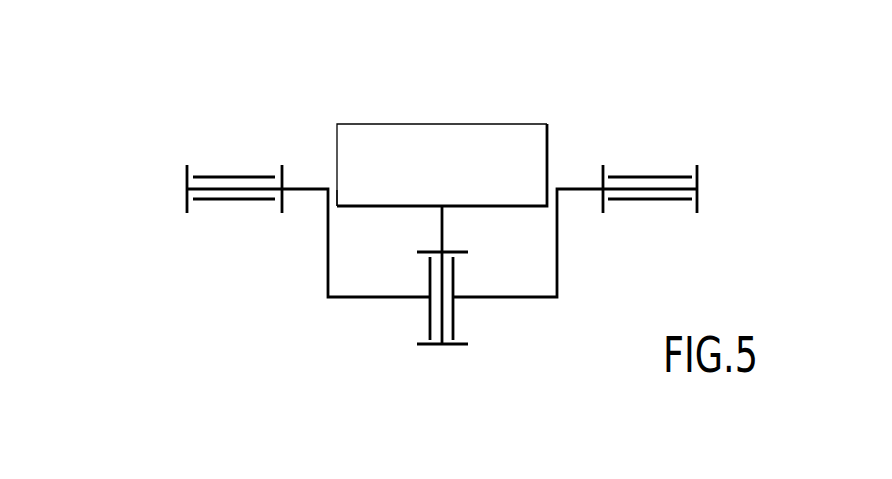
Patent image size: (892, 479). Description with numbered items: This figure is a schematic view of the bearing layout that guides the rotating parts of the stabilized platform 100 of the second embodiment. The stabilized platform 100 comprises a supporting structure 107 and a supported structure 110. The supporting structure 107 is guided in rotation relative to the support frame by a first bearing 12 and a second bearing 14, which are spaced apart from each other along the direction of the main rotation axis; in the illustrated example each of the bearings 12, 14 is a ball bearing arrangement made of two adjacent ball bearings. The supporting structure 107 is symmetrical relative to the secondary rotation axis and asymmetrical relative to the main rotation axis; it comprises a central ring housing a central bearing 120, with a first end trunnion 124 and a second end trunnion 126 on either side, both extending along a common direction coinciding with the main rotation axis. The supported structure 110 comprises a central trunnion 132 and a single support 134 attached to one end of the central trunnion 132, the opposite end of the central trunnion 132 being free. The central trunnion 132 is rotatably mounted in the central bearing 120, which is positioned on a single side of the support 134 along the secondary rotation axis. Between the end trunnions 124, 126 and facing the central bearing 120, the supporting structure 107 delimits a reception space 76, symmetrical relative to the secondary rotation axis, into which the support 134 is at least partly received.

The stabilized platform 100 is at (243, 99).
The supporting structure 107 is at (136, 191).
The supported structure 110 is at (452, 377).
The first bearing 12 is at (233, 202).
The second bearing 14 is at (650, 202).
The reception space 76 is at (344, 193).
The central bearing 120 is at (427, 318).
The first end trunnion 124 is at (213, 187).
The second end trunnion 126 is at (672, 187).
The central trunnion 132 is at (443, 273).
The support 134 is at (547, 134).